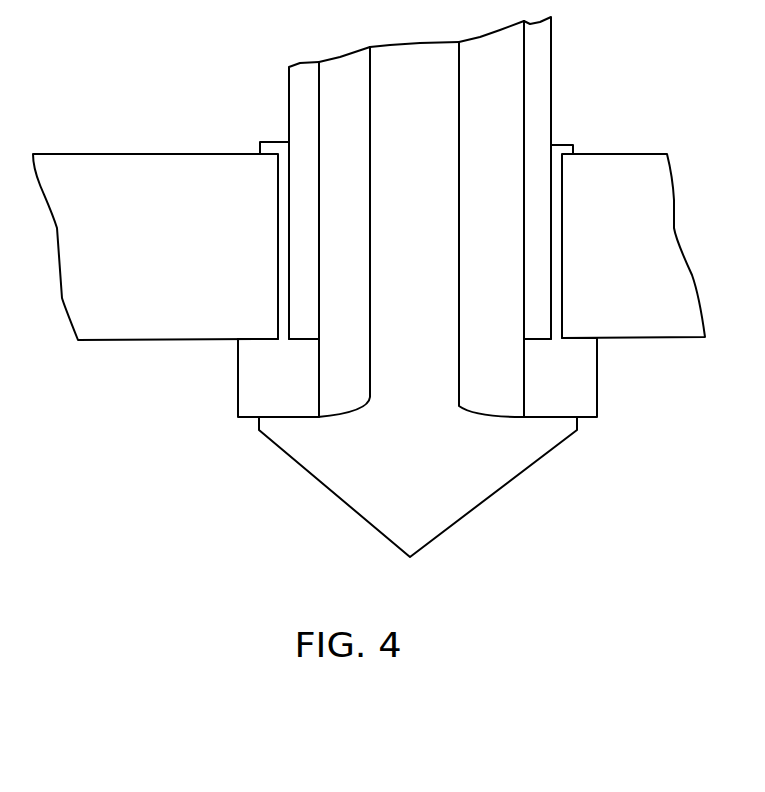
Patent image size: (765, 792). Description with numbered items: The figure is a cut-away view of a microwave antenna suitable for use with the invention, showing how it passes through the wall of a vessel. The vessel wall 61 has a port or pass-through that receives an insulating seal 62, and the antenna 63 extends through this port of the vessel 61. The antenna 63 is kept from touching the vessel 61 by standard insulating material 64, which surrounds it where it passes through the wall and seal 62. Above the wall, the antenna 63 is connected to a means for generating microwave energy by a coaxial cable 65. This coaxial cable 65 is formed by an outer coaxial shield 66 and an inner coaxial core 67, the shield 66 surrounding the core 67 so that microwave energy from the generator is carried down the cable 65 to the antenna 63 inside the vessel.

The vessel wall 61 is at (138, 153).
The insulating seal 62 is at (237, 388).
The antenna 63 is at (333, 497).
The insulating material 64 is at (327, 97).
The coaxial cable 65 is at (552, 77).
The outer coaxial shield 66 is at (300, 82).
The inner coaxial core 67 is at (391, 68).